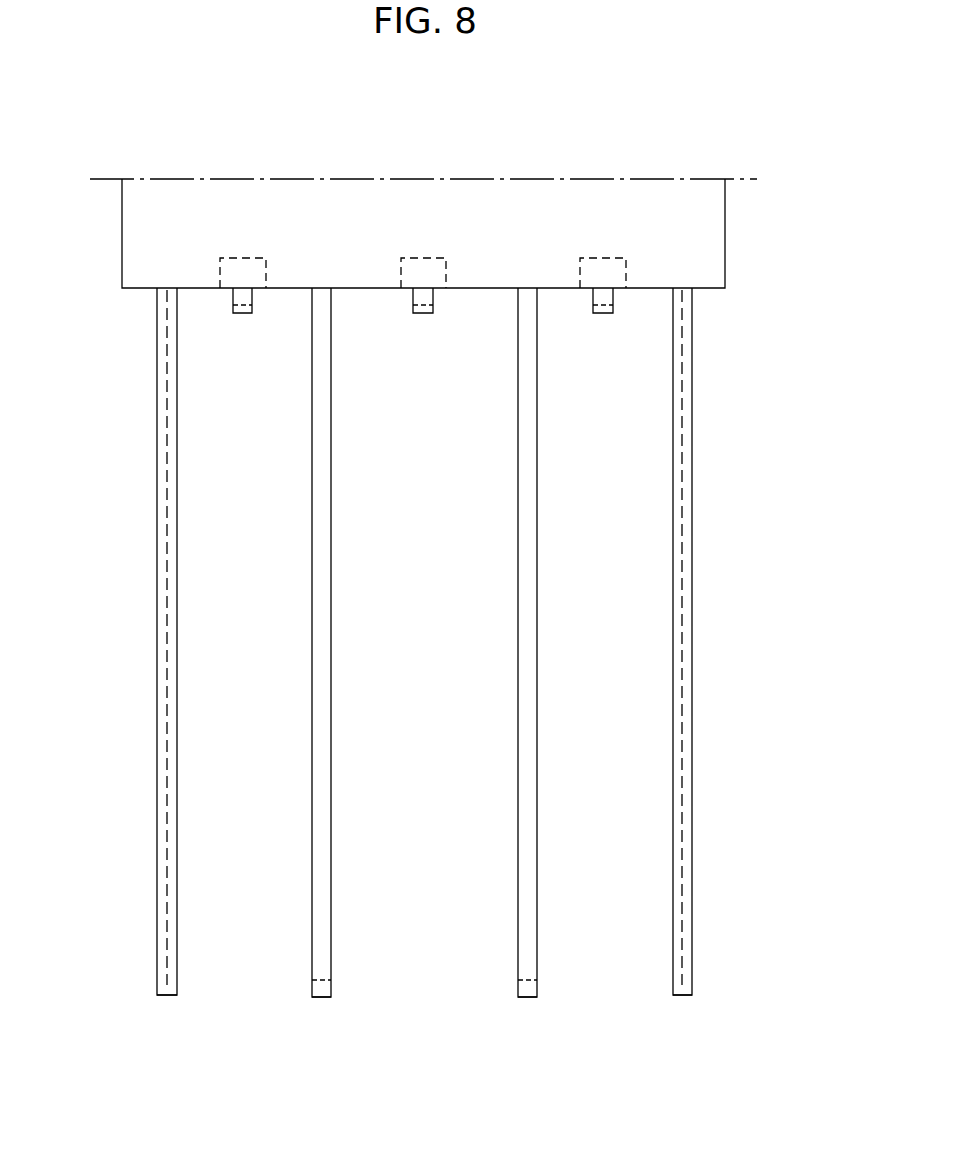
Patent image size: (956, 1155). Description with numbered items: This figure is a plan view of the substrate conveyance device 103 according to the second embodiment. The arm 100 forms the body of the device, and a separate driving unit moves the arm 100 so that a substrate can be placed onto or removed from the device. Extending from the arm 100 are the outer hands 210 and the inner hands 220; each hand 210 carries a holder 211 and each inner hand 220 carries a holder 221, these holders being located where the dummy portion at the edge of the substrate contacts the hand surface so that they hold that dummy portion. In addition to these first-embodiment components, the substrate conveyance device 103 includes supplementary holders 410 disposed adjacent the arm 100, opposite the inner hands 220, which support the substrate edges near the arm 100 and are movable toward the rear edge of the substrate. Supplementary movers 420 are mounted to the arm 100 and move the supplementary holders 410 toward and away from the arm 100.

The arm 100 is at (725, 240).
The substrate conveyance device 103 is at (713, 138).
The hand 210 is at (156, 835).
The holder 211 is at (178, 995).
The inner hand 220 is at (320, 305).
The holder 221 is at (519, 990).
The supplementary holder 410 is at (430, 313).
The supplementary mover 420 is at (604, 260).